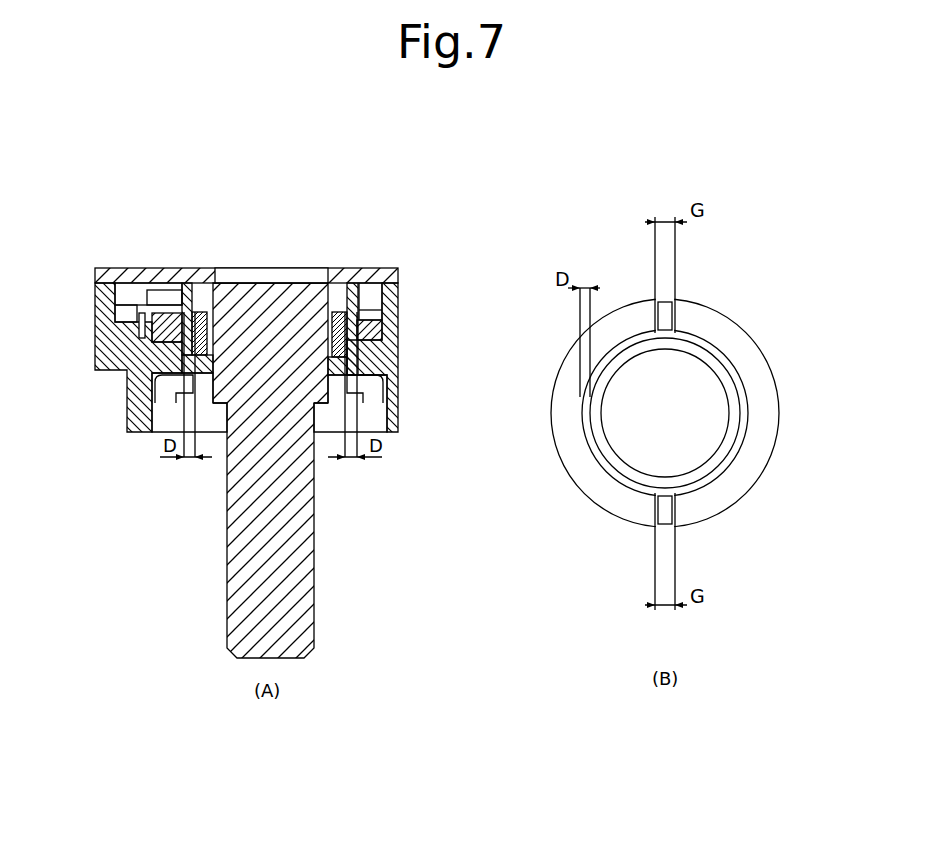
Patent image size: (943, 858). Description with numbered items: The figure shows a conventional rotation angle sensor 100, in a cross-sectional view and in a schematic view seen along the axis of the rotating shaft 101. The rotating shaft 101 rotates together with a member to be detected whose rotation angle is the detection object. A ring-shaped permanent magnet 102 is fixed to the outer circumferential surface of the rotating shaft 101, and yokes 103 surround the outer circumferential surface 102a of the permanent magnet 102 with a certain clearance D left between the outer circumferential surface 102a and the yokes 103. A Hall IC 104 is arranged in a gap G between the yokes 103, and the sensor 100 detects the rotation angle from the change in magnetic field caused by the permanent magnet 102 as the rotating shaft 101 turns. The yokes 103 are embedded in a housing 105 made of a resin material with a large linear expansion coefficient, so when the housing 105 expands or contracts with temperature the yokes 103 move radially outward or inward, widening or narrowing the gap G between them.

The rotation angle sensor 100 is at (427, 258).
The rotating shaft 101 is at (238, 538).
The permanent magnet 102 is at (222, 327).
The outer circumferential surface 102a is at (189, 322).
The yokes 103 is at (162, 322).
The Hall IC 104 is at (664, 306).
The housing 105 is at (105, 358).